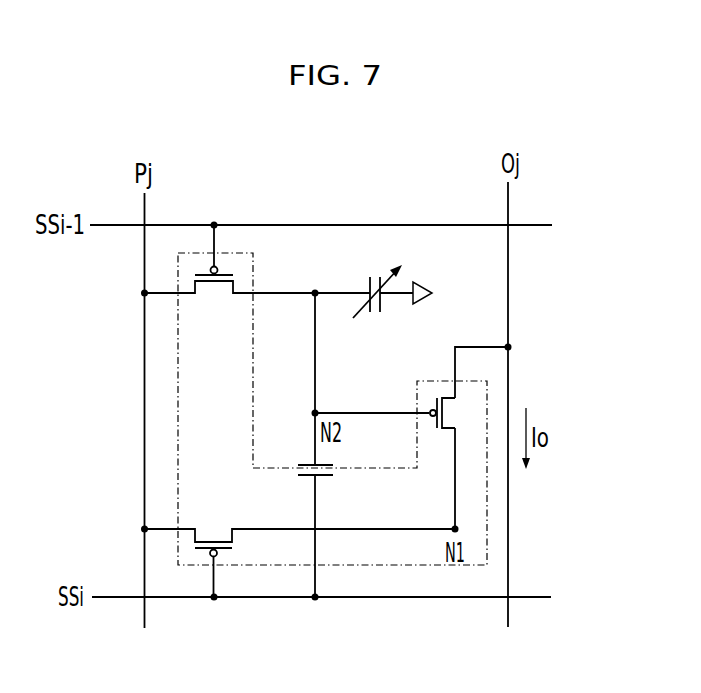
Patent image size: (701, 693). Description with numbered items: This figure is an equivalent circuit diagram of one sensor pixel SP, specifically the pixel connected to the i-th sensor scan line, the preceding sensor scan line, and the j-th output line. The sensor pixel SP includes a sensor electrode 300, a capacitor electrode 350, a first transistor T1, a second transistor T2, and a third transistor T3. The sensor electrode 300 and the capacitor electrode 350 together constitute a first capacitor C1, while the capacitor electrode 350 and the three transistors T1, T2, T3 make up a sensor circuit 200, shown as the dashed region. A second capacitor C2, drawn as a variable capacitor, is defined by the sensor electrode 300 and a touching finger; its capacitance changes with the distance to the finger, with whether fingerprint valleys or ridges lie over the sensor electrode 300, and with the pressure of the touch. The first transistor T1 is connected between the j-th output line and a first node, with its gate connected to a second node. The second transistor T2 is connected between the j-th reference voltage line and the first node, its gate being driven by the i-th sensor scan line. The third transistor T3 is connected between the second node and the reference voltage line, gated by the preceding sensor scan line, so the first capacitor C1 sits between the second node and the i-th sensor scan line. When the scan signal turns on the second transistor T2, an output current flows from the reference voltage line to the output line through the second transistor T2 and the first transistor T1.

The sensor circuit 200 is at (485, 530).
The sensor electrode 300 is at (303, 460).
The capacitor electrode 350 is at (305, 478).
The sensor pixel SP is at (539, 106).
The first transistor T1 is at (451, 415).
The second transistor T2 is at (300, 550).
The third transistor T3 is at (258, 273).
The first capacitor C1 is at (316, 468).
The second capacitor C2 is at (392, 304).